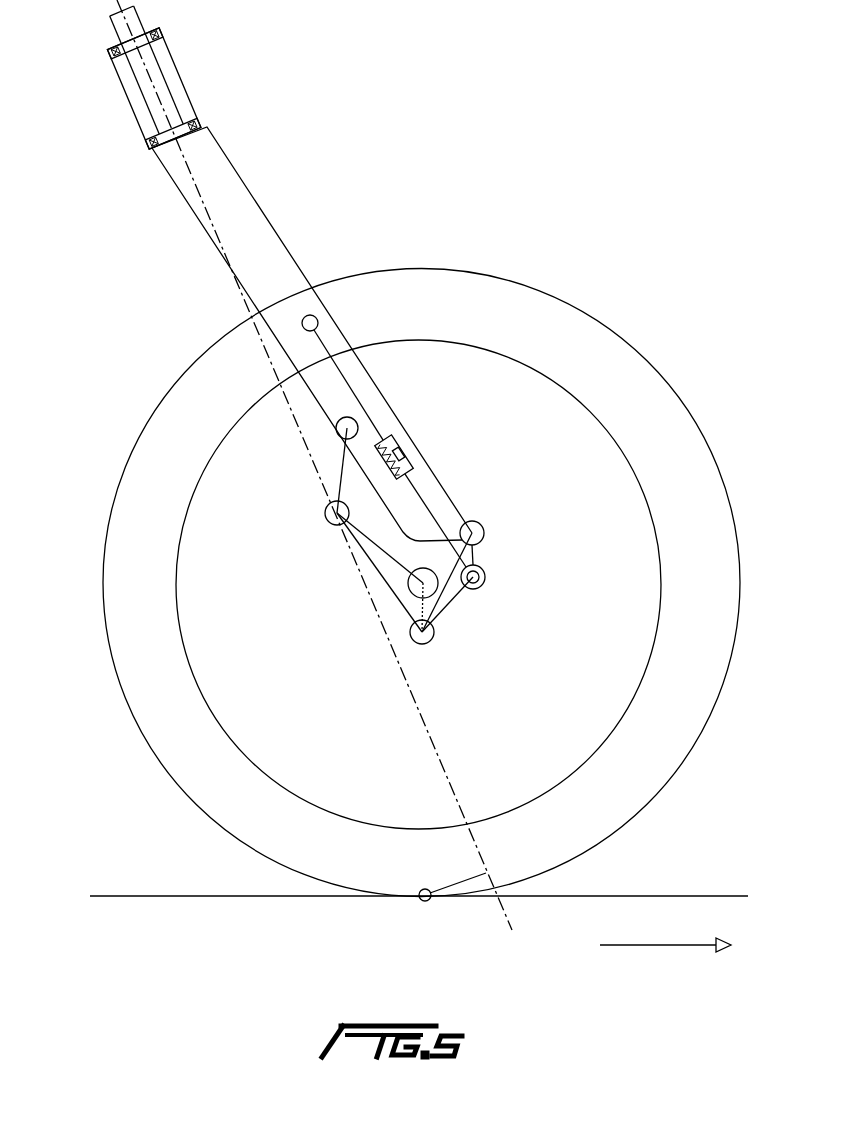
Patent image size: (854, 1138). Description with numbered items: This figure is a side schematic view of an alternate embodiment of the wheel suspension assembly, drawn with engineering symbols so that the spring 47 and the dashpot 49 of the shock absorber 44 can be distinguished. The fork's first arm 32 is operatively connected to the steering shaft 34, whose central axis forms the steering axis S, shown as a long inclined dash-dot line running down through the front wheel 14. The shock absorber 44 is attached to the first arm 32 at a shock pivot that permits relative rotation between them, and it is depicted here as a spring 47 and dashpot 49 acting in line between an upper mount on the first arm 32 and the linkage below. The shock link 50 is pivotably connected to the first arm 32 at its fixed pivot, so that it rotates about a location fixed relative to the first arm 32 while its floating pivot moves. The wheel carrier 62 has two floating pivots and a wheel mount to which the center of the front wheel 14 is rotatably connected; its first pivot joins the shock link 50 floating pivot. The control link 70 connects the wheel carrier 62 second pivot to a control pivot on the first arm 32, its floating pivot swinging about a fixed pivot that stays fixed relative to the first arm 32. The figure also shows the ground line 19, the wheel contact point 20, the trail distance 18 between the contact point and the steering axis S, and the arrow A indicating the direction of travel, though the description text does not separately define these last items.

The front wheel 14 is at (160, 762).
The trail 18 is at (458, 883).
The ground surface 19 is at (258, 898).
The contact point 20 is at (425, 902).
The first arm 32 is at (260, 227).
The steering shaft 34 is at (183, 80).
The shock absorber 44 is at (384, 431).
The spring 47 is at (382, 448).
The dashpot 49 is at (407, 447).
The shock link 50 is at (455, 600).
The wheel carrier 62 is at (387, 587).
The control link 70 is at (340, 468).
The steering axis S is at (443, 748).
The direction of travel A is at (654, 945).